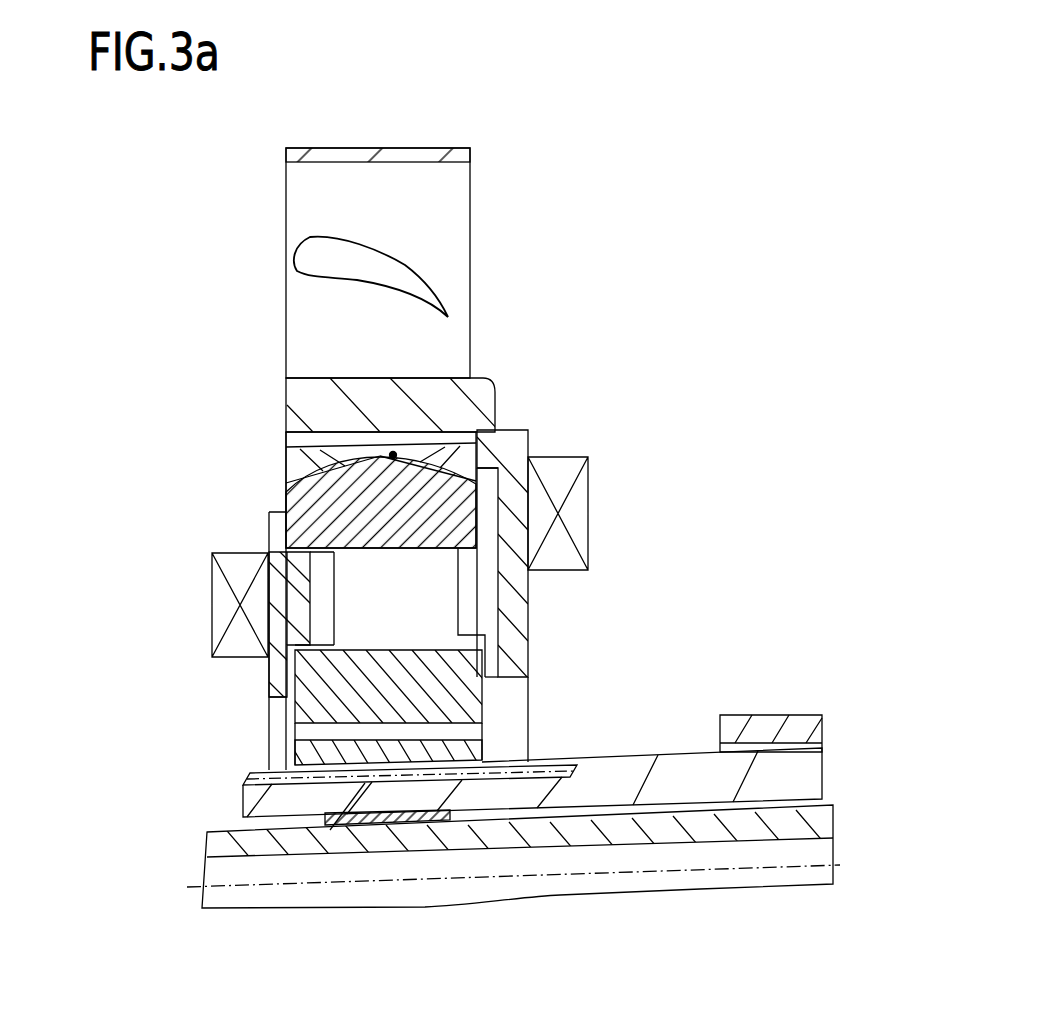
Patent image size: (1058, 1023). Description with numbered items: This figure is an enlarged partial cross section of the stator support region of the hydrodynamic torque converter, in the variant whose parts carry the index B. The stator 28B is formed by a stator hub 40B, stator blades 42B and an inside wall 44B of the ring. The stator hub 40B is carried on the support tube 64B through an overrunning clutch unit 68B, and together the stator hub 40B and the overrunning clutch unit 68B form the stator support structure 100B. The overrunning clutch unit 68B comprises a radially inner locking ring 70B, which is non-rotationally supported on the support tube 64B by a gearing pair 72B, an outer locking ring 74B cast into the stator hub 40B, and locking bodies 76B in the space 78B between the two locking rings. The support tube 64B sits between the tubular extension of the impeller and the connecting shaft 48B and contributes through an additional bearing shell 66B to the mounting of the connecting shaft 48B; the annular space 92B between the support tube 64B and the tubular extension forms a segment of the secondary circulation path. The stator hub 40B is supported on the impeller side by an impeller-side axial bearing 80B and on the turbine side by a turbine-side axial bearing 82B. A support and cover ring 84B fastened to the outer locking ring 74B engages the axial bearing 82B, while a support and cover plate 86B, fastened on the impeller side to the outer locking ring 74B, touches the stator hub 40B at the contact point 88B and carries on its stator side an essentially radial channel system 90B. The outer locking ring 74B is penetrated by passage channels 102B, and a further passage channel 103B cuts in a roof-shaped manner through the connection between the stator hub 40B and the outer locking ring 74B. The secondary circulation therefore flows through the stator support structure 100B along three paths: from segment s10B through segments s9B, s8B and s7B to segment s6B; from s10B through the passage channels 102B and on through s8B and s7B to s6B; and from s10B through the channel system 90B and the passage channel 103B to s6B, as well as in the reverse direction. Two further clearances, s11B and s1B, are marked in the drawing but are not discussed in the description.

The stator 28B is at (343, 220).
The inside wall of the ring 44B is at (448, 148).
The stator blades 42B is at (417, 277).
The stator hub 40B is at (492, 386).
The stator support structure 100B is at (393, 455).
The outer locking ring 74B is at (287, 467).
The passage channel 103B is at (287, 463).
The circulation path segment s6B is at (250, 500).
The space between the locking rings 78B is at (318, 580).
The contact point 88B is at (484, 465).
The support and cover plate 86B is at (512, 492).
The impeller-side axial bearing 80B is at (588, 498).
The channel system 90B is at (485, 525).
The support and cover ring 84B is at (278, 665).
The turbine-side axial bearing 82B is at (212, 587).
The circulation path segment s7B is at (222, 597).
The locking bodies 76B is at (458, 613).
The overrunning clutch unit 68B is at (546, 650).
The circulation path segment s8B is at (280, 698).
The inner locking ring 70B is at (287, 752).
The passage channels 102B is at (483, 722).
The circulation path segment s10B is at (508, 745).
The annular space 92B is at (812, 718).
The clearance s11 s11B is at (755, 743).
The circulation path segment s9B is at (318, 780).
The support tube 64B is at (723, 780).
The bearing shell 66B is at (373, 780).
The connecting shaft 48B is at (658, 832).
The gearing pair 72B is at (458, 783).
The clearance s1 s1B is at (815, 853).